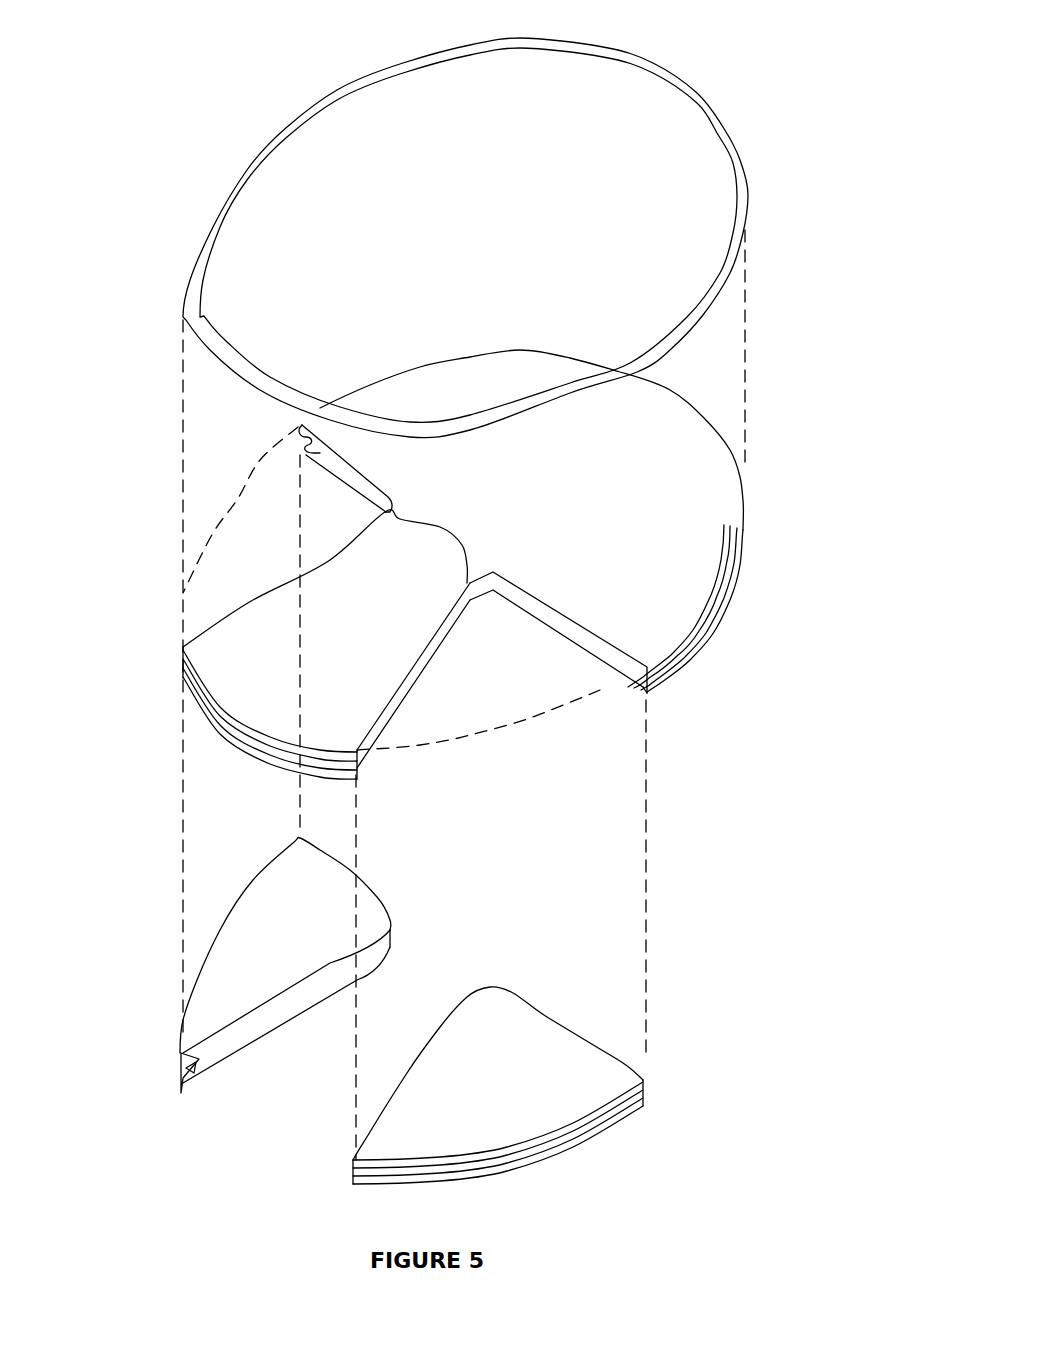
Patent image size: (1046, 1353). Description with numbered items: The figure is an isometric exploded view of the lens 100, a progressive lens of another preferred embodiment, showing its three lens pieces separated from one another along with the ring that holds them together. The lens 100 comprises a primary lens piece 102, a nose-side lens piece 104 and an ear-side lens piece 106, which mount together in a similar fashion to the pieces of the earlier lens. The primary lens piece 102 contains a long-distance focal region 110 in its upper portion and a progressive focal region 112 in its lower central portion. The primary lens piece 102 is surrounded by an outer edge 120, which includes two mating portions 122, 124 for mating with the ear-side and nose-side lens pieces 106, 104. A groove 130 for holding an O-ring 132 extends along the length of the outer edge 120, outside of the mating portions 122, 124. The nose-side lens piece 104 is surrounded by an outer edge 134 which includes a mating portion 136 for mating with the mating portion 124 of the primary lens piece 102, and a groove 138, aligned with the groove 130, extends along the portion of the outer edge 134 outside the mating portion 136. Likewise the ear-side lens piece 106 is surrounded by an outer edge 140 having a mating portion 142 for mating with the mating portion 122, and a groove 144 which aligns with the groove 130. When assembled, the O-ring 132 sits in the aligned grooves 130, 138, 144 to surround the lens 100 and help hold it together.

The lens 100 is at (790, 180).
The primary lens piece 102 is at (727, 520).
The nose-side lens piece 104 is at (188, 1035).
The ear-side lens piece 106 is at (588, 1102).
The long-distance focal region 110 is at (718, 472).
The progressive focal region 112 is at (230, 685).
The outer edge 120 is at (733, 600).
The mating portion 122 is at (298, 457).
The mating portion 124 is at (619, 665).
The groove 130 is at (668, 662).
The O-ring 132 is at (698, 88).
The outer edge 134 is at (355, 1188).
The mating portion 136 is at (645, 1085).
The groove 138 is at (483, 1153).
The outer edge 140 is at (179, 1064).
The mating portion 142 is at (217, 1053).
The groove 144 is at (182, 1079).